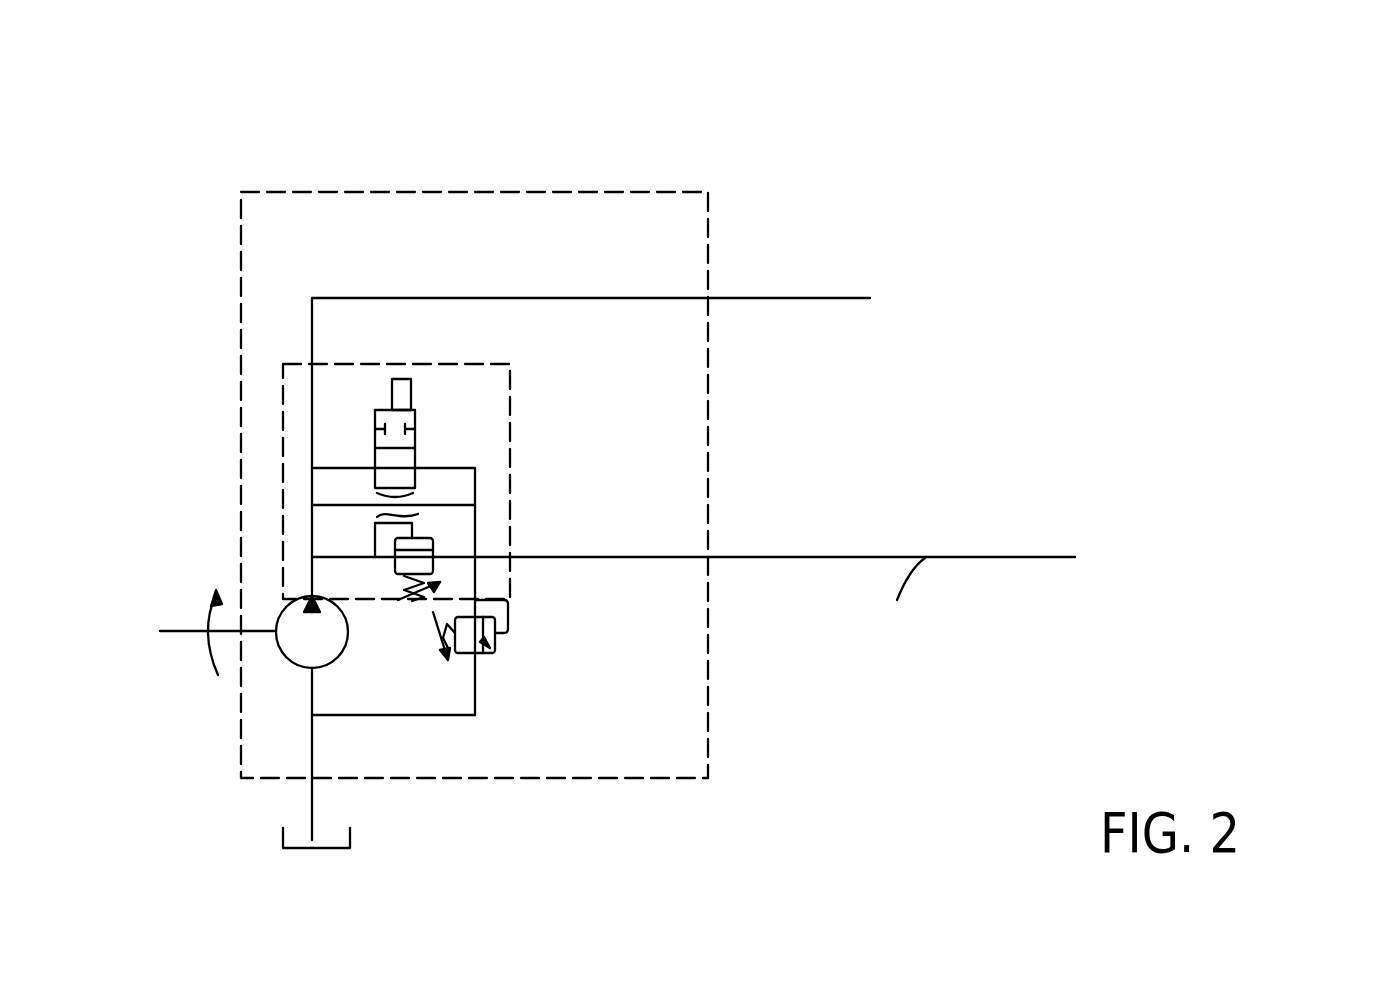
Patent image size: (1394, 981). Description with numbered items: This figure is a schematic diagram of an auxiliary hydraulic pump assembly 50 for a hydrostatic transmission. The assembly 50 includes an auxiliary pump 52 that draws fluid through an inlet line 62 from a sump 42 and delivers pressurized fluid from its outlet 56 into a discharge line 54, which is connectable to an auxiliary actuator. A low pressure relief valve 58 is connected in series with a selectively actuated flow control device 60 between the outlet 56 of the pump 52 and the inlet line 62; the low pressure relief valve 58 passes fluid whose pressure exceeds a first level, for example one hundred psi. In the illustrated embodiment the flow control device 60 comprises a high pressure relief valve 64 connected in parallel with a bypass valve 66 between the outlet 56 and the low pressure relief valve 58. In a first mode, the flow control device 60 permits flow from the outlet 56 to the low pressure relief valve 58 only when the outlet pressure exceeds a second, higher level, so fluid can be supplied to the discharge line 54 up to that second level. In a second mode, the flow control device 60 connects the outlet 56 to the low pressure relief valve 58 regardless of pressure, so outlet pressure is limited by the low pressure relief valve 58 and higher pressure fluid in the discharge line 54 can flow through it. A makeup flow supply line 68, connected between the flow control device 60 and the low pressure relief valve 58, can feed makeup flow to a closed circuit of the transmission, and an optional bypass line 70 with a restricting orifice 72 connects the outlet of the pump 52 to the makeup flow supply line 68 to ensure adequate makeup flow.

The sump 42 is at (325, 848).
The auxiliary hydraulic pump assembly 50 is at (320, 126).
The auxiliary pump 52 is at (293, 642).
The discharge line 54 is at (362, 298).
The outlet 56 is at (305, 597).
The low pressure relief valve 58 is at (470, 637).
The flow control device 60 is at (497, 363).
The inlet line 62 is at (312, 730).
The high pressure relief valve 64 is at (433, 546).
The bypass valve 66 is at (400, 450).
The makeup flow supply line 68 is at (768, 556).
The bypass line 70 is at (440, 504).
The restricting orifice 72 is at (420, 515).